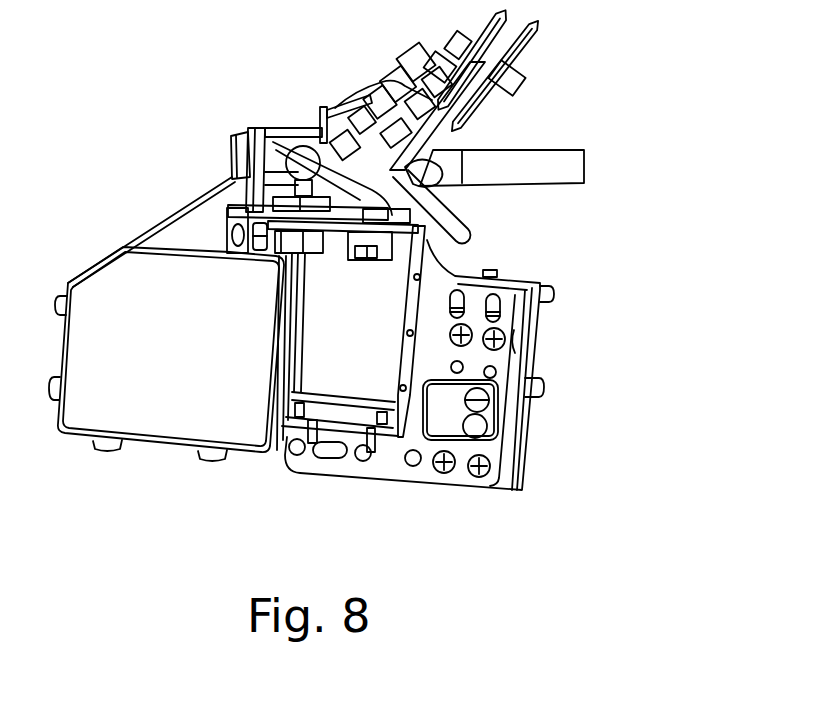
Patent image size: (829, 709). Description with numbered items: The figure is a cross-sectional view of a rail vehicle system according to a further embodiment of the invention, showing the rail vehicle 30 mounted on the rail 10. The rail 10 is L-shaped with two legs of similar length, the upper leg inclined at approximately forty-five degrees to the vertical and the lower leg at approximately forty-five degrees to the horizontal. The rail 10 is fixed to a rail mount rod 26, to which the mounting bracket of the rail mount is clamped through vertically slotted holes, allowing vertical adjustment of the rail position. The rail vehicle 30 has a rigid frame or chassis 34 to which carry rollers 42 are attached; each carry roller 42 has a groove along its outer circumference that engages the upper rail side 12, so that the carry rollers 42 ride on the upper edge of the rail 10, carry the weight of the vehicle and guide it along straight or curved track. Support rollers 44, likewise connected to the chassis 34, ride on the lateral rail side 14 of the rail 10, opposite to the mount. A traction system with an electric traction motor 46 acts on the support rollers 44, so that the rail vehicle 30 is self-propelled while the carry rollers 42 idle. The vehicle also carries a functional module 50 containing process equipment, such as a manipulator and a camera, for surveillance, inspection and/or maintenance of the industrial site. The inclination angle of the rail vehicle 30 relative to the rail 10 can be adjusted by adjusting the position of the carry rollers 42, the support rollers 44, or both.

The rail 10 is at (467, 232).
The upper rail side 12 is at (455, 115).
The lateral rail side 14 is at (402, 168).
The rail mount rod 26 is at (572, 177).
The rail vehicle 30 is at (562, 394).
The chassis 34 is at (282, 152).
The carry rollers 42 is at (525, 40).
The support rollers 44 is at (382, 160).
The electric traction motor 46 is at (375, 377).
The functional module 50 is at (168, 403).